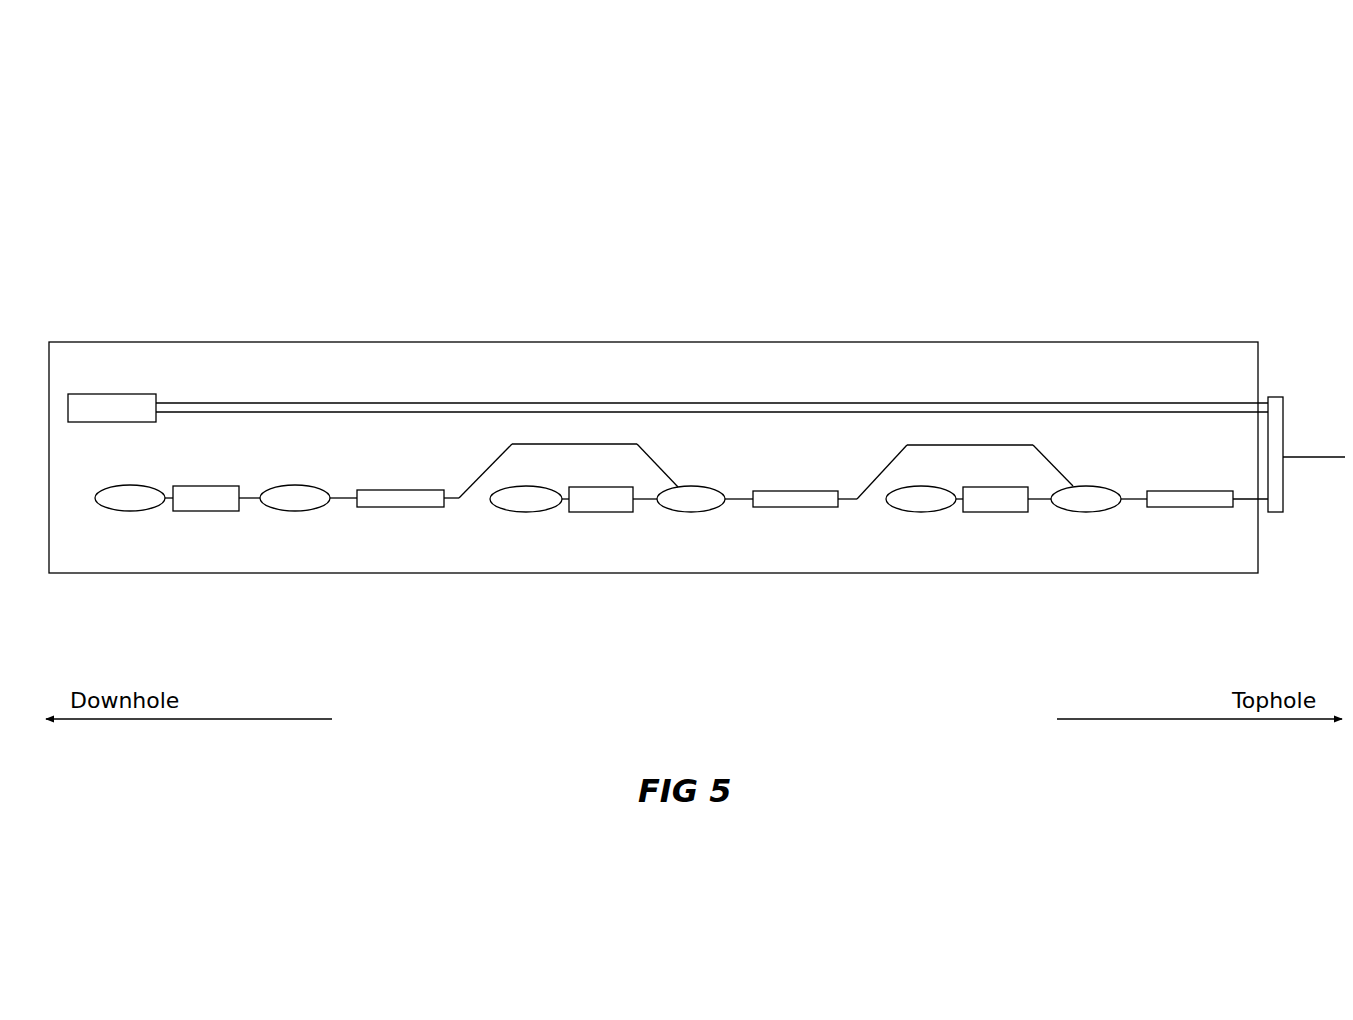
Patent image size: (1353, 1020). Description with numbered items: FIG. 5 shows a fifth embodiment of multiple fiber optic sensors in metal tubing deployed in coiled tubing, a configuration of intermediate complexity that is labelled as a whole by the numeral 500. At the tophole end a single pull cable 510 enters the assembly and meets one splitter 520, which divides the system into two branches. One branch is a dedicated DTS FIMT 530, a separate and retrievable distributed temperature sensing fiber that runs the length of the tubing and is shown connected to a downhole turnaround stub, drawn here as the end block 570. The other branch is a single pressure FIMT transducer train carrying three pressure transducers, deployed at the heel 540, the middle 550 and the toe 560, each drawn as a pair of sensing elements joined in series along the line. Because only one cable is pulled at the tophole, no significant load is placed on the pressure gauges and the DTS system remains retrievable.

The downhole sensor system 500 is at (210, 162).
The pull cable 510 is at (1307, 455).
The splitter 520 is at (1283, 487).
The dedicated DTS FIMT 530 is at (418, 402).
The heel pressure transducer 540 is at (1010, 538).
The middle pressure transducer 550 is at (615, 540).
The toe pressure transducer 560 is at (218, 540).
The termination 570 is at (95, 394).